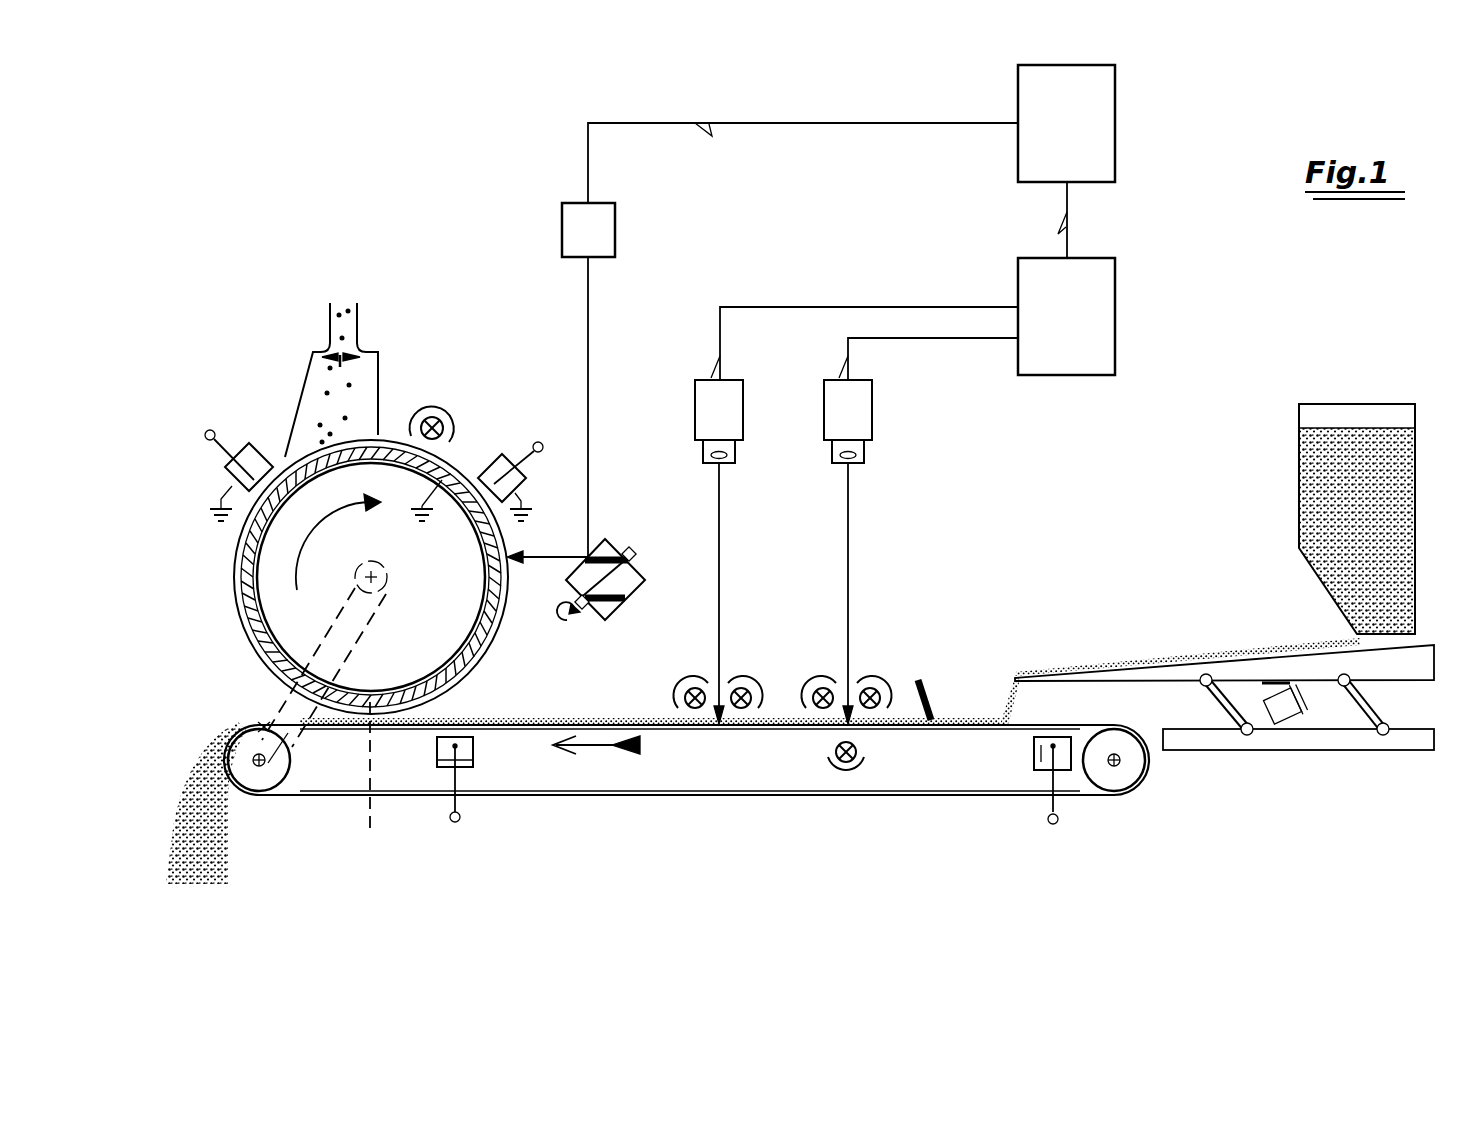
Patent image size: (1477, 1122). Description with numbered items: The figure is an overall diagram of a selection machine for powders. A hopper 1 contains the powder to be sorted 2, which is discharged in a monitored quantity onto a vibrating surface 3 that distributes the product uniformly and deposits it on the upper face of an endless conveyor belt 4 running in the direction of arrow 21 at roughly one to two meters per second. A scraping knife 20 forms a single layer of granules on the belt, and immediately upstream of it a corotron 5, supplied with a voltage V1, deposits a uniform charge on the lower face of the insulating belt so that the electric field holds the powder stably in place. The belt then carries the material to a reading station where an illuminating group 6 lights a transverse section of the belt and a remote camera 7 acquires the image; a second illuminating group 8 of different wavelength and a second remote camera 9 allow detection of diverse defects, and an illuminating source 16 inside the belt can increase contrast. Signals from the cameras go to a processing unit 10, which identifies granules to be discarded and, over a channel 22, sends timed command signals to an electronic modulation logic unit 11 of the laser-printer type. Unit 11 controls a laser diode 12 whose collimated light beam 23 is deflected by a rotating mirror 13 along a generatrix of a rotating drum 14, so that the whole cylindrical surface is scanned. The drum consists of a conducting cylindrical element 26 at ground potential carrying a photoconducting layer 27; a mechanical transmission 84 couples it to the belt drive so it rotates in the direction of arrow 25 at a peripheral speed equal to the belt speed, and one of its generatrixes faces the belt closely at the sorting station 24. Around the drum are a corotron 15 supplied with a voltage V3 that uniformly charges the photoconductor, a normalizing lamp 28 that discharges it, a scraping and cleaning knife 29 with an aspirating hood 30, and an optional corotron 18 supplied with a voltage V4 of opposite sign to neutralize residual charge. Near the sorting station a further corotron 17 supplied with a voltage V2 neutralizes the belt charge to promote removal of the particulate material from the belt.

The hopper 1 is at (1385, 404).
The powder to be sorted 2 is at (1415, 476).
The vibrating surface 3 is at (1434, 648).
The endless conveyor belt 4 is at (763, 806).
The corotron 5 is at (1016, 798).
The illuminating group 6 is at (877, 680).
The remote camera 7 is at (873, 406).
The second illuminating group 8 is at (749, 680).
The second remote camera 9 is at (744, 406).
The processing unit 10 is at (1116, 337).
The electronic modulation logic unit 11 is at (1116, 148).
The laser diode 12 is at (616, 228).
The rotating mirror 13 is at (632, 590).
The rotating drum 14 is at (277, 585).
The corotron 15 is at (499, 455).
The illuminating source 16 is at (853, 764).
The corotron 17 is at (478, 760).
The corotron 18 is at (229, 472).
The scraping knife 20 is at (920, 680).
The arrow 21 is at (603, 753).
The channel 22 is at (1067, 218).
The light beam 23 is at (592, 353).
The sorting station 24 is at (324, 724).
The arrow 25 is at (362, 509).
The conducting cylindrical element 26 is at (504, 596).
The photoconducting layer 27 is at (499, 640).
The normalizing lamp 28 is at (449, 406).
The scraping and cleaning knife 29 is at (411, 450).
The aspirating hood 30 is at (353, 352).
The mechanical transmission 84 is at (283, 704).
The voltage V1 is at (1072, 822).
The voltage V2 is at (473, 820).
The voltage V3 is at (545, 436).
The voltage V4 is at (213, 421).